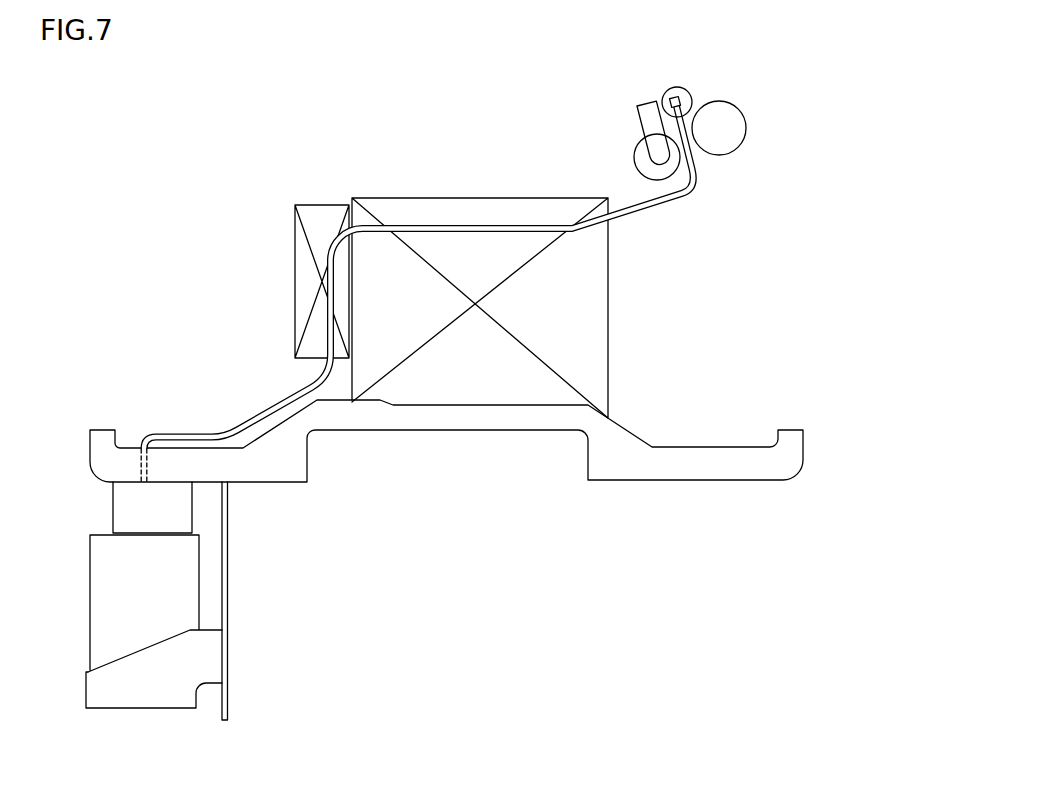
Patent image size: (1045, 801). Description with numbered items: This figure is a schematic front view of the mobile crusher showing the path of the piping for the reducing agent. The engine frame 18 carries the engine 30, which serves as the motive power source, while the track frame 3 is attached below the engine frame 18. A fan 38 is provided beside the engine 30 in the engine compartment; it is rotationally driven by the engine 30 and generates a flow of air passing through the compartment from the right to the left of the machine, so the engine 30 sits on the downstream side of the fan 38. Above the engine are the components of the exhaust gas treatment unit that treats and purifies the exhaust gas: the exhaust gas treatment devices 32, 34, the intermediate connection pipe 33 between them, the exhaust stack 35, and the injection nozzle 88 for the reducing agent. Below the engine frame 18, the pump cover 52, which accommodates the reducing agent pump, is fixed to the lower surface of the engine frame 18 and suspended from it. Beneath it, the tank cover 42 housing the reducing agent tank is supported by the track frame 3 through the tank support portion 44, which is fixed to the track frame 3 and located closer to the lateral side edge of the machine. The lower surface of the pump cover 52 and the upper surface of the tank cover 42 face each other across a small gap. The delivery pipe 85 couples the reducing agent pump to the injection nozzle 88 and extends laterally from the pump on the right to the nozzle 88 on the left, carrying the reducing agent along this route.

The track frame 3 is at (227, 558).
The engine frame 18 is at (607, 462).
The engine 30 is at (567, 306).
The exhaust gas treatment device 32 is at (725, 128).
The intermediate connection pipe 33 is at (688, 100).
The exhaust gas treatment device 34 is at (642, 158).
The exhaust stack 35 is at (650, 120).
The fan 38 is at (307, 278).
The tank cover 42 is at (118, 603).
The tank support portion 44 is at (142, 685).
The pump cover 52 is at (127, 510).
The delivery pipe 85 is at (442, 227).
The injection nozzle 88 is at (675, 100).